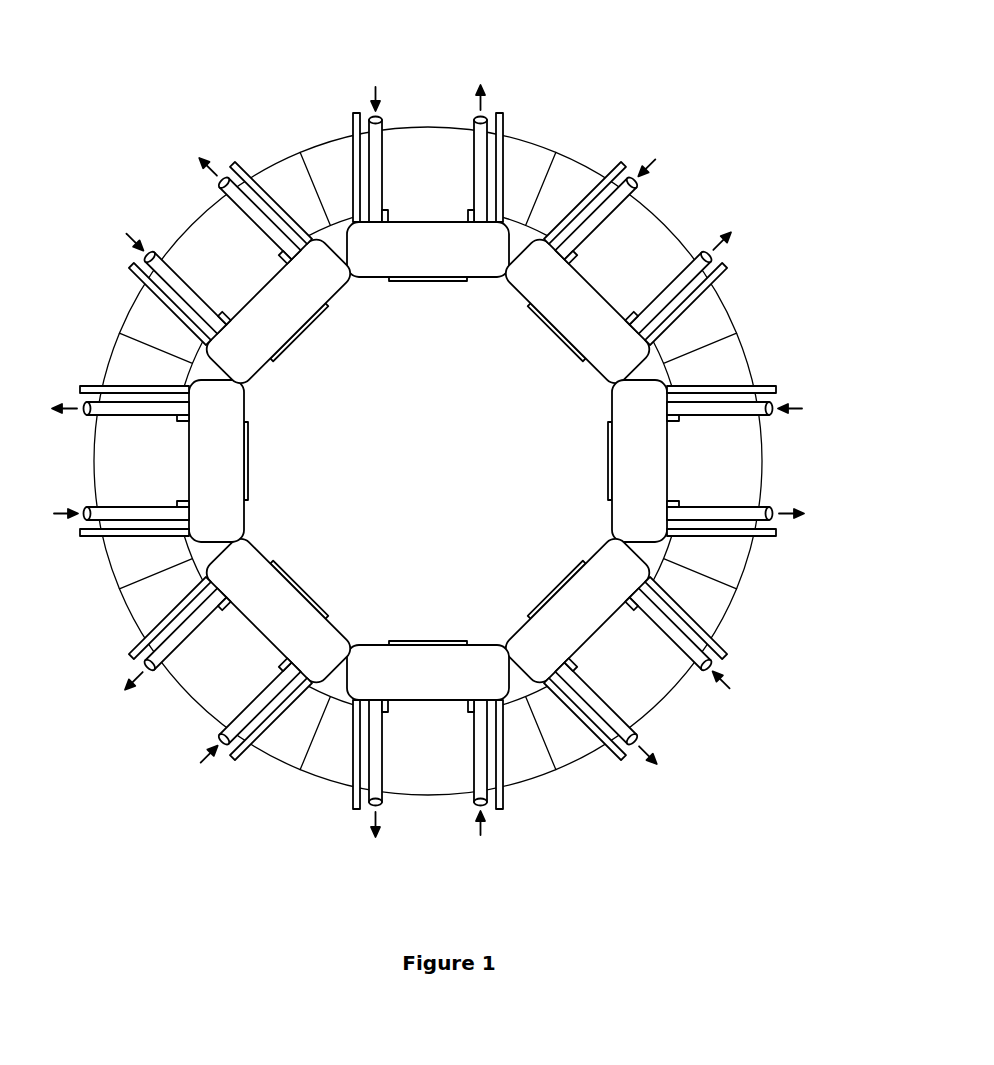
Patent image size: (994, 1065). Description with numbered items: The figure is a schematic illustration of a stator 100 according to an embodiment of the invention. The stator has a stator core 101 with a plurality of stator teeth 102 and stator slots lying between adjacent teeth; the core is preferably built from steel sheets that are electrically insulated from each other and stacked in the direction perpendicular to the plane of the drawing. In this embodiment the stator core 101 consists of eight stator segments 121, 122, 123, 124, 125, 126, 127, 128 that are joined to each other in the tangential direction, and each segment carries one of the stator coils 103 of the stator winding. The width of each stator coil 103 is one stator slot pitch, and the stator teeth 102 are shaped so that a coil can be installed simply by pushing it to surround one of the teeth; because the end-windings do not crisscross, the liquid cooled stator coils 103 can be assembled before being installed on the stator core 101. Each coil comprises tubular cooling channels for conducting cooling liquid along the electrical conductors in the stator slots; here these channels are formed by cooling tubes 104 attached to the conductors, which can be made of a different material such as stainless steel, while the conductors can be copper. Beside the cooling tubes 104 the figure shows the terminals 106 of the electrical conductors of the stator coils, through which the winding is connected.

The stator 100 is at (435, 443).
The stator core 101 is at (428, 428).
The stator teeth 102 is at (432, 283).
The stator coils 103 is at (412, 260).
The cooling tubes 104 is at (383, 170).
The terminals 106 is at (352, 140).
The stator segment 121 is at (415, 196).
The stator segment 122 is at (212, 272).
The stator segment 123 is at (139, 473).
The stator segment 124 is at (214, 670).
The stator segment 125 is at (415, 752).
The stator segment 126 is at (616, 663).
The stator segment 127 is at (694, 470).
The stator segment 128 is at (613, 272).